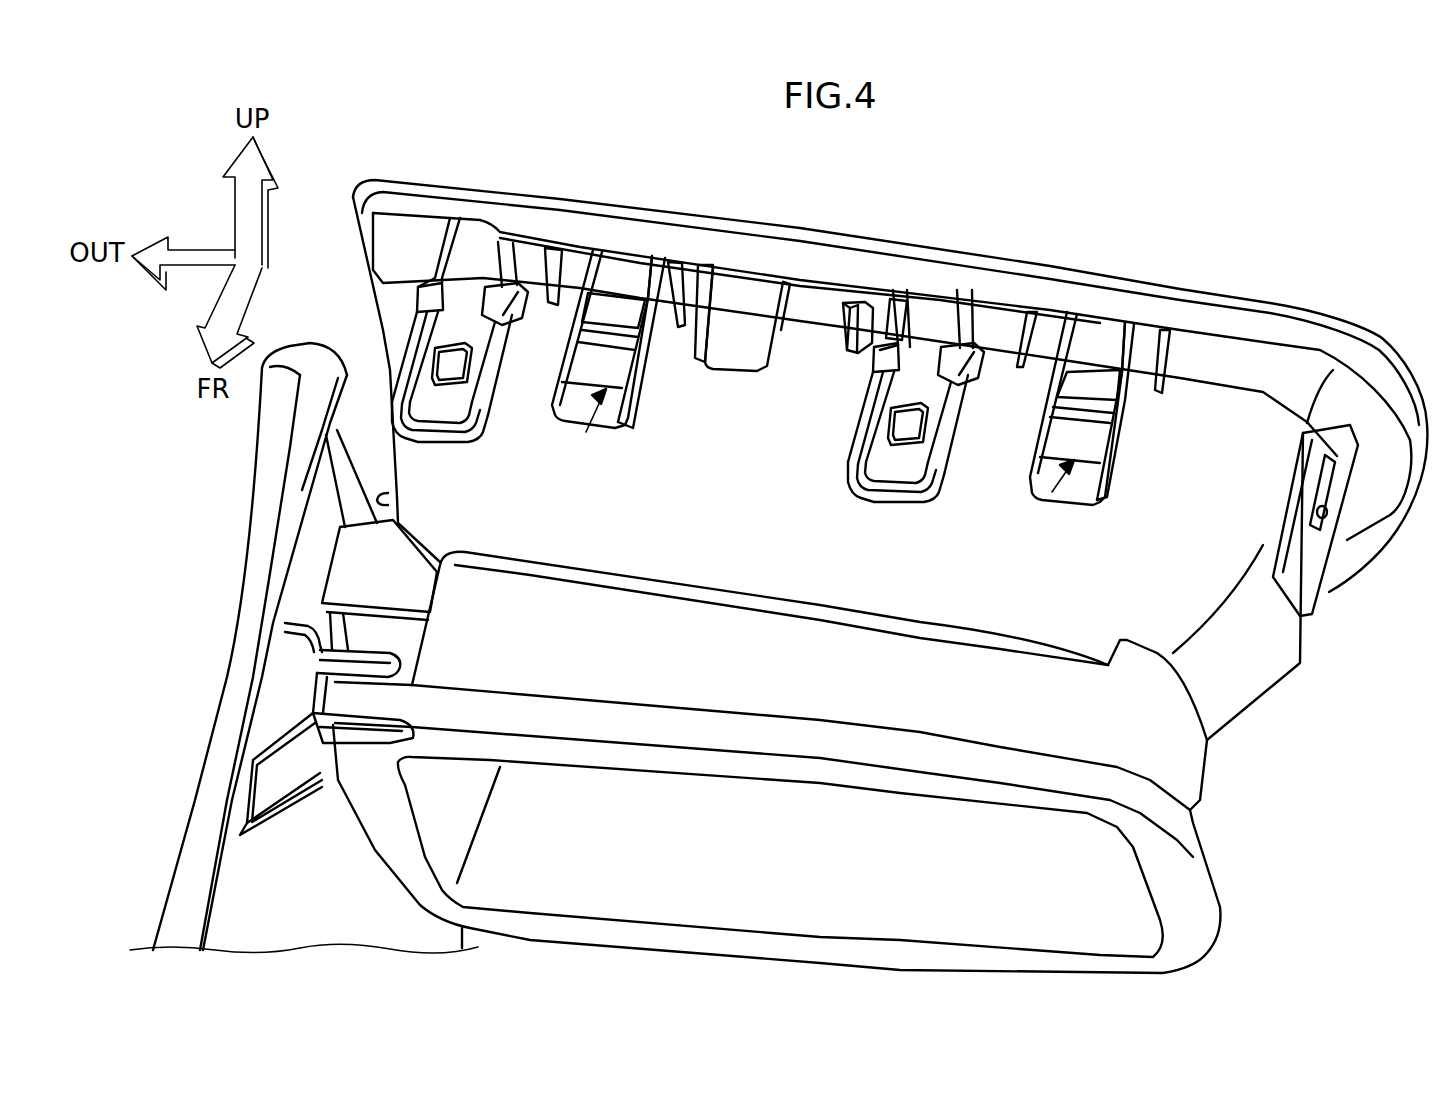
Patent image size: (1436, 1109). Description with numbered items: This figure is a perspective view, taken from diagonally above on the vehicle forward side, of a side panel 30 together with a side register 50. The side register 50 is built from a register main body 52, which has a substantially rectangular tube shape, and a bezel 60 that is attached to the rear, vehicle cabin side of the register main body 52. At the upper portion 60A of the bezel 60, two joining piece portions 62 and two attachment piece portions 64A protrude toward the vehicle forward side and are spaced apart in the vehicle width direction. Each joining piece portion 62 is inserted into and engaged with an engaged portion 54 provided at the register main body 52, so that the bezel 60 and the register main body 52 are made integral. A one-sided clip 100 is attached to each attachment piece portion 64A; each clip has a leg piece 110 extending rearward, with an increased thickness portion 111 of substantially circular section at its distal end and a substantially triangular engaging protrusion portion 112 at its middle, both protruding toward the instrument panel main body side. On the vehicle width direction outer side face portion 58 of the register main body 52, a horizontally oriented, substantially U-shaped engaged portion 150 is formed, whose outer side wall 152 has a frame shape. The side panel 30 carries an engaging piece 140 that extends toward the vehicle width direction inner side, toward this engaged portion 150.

The side panel 30 is at (200, 848).
The side register 50 is at (1378, 214).
The register main body 52 is at (1253, 680).
The engaged portion 54 is at (488, 442).
The side face portion 58 is at (390, 503).
The bezel 60 is at (1111, 273).
The upper portion 60A is at (1237, 326).
The joining piece portion 62 is at (462, 302).
The attachment piece portion 64A is at (645, 372).
The one-sided clip 100 is at (603, 433).
The leg piece 110 is at (586, 435).
The increased thickness portion 111 is at (618, 296).
The engaging protrusion portion 112 is at (594, 332).
The engaging piece 140 is at (318, 574).
The engaged portion 150 is at (410, 597).
The side wall 152 is at (352, 530).